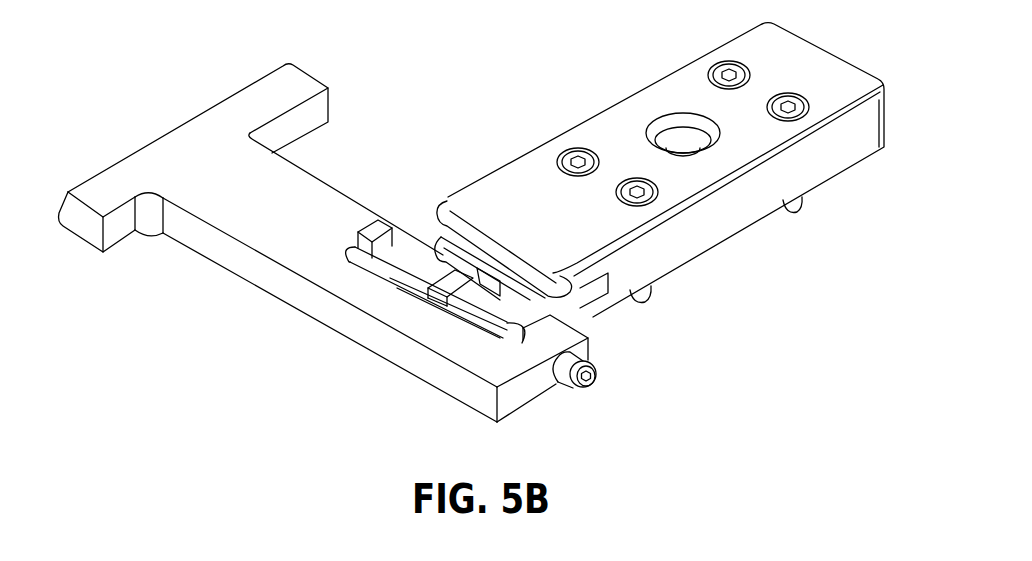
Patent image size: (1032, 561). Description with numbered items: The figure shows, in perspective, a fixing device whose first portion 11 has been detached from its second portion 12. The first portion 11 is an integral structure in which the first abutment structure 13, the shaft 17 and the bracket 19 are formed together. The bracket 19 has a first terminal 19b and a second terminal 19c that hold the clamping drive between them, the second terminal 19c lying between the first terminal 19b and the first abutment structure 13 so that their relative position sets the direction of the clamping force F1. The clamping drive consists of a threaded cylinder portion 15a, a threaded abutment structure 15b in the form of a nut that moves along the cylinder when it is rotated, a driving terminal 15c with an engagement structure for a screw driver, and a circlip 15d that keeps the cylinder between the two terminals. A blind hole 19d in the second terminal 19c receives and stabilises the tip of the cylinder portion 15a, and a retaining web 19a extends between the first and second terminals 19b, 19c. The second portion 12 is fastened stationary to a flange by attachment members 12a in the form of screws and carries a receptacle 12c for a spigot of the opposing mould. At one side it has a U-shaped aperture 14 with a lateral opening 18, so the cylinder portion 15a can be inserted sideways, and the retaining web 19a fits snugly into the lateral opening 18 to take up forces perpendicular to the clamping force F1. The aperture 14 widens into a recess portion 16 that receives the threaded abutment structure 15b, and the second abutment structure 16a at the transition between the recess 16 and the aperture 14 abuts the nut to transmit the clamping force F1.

The first portion 11 is at (203, 297).
The second portion 12 is at (582, 120).
The attachment member 12a is at (743, 64).
The receptacle 12c is at (722, 133).
The first abutment structure 13 is at (172, 128).
The aperture 14 is at (611, 307).
The cylinder portion 15a is at (418, 263).
The threaded abutment structure 15b is at (417, 266).
The driving terminal 15c is at (590, 393).
The circlip 15d is at (522, 328).
The recess portion 16 is at (486, 234).
The second abutment structure 16a is at (505, 285).
The shaft 17 is at (297, 155).
The lateral opening 18 is at (446, 194).
The bracket 19 is at (405, 372).
The retaining web 19a is at (352, 250).
The first terminal 19b is at (590, 345).
The second terminal 19c is at (370, 238).
The blind hole 19d is at (365, 224).
The clamping force F1 is at (201, 97).